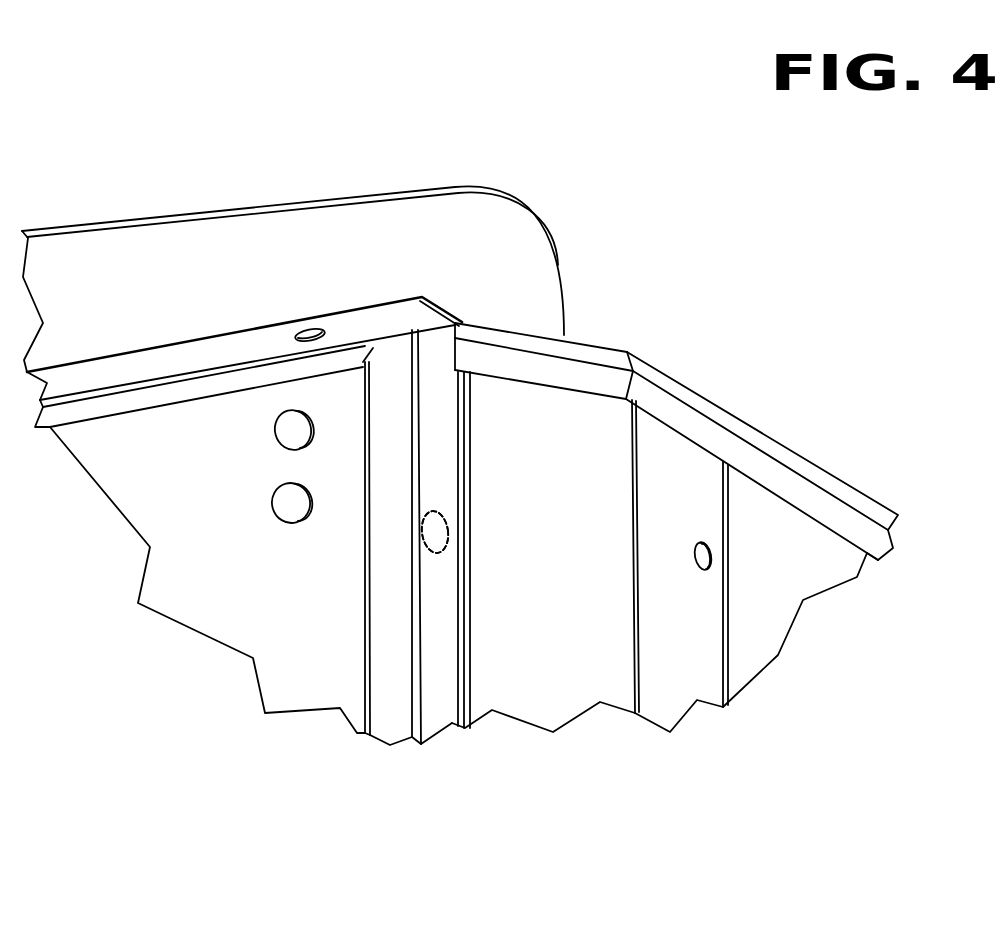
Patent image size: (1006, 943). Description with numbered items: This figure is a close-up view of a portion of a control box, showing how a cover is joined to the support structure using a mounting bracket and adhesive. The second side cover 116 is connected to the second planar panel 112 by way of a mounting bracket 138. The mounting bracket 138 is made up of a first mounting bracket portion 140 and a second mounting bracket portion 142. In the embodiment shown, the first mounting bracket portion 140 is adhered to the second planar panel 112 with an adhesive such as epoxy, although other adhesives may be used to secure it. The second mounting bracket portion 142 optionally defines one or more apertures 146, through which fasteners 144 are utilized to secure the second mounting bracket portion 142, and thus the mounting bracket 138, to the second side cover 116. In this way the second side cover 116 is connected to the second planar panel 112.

The second planar panel 112 is at (343, 202).
The second side cover 116 is at (730, 413).
The mounting bracket 138 is at (453, 313).
The first mounting bracket portion 140 is at (393, 443).
The second mounting bracket portion 142 is at (467, 423).
The fasteners 144 is at (453, 535).
The apertures 146 is at (435, 533).